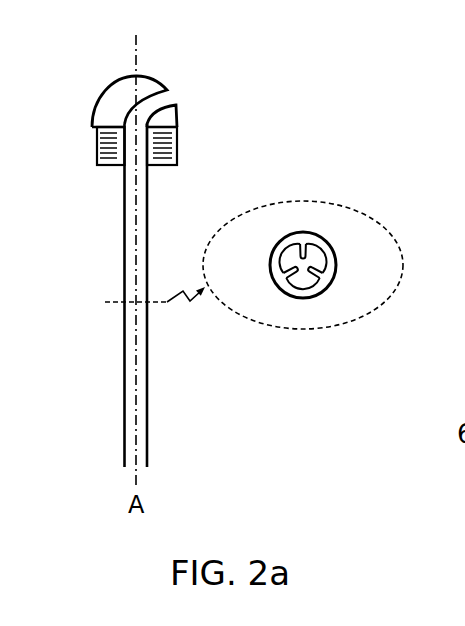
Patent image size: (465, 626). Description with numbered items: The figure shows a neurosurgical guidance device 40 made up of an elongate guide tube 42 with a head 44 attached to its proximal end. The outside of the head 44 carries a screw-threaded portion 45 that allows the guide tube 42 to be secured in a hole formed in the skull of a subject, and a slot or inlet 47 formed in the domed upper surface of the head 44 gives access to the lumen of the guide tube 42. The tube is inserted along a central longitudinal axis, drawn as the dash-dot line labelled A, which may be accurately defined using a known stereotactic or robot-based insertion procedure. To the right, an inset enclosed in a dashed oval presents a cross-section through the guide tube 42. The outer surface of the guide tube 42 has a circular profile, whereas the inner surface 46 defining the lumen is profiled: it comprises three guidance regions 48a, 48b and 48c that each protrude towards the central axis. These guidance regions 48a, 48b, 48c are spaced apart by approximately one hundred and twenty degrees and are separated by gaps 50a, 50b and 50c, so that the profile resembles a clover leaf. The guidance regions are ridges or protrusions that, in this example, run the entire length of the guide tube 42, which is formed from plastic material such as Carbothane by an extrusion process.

The guidance device 40 is at (235, 258).
The guide tube 42 is at (148, 393).
The head 44 is at (118, 80).
The screw-threaded portion 45 is at (97, 153).
The inner surface 46 is at (321, 268).
The slot or inlet 47 is at (168, 101).
The guidance region 48a is at (313, 250).
The guidance region 48b is at (302, 253).
The guidance region 48c is at (313, 282).
The gap 50a is at (292, 243).
The gap 50b is at (288, 277).
The gap 50c is at (334, 276).